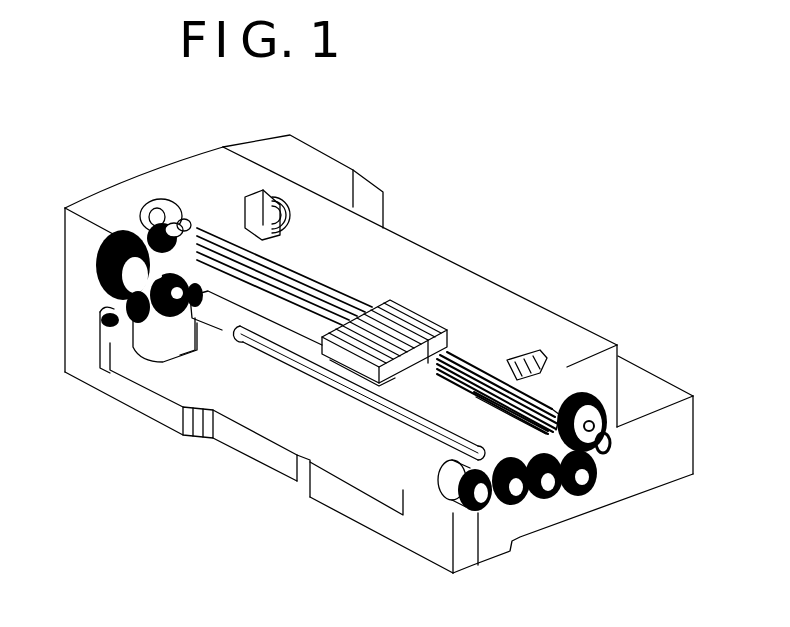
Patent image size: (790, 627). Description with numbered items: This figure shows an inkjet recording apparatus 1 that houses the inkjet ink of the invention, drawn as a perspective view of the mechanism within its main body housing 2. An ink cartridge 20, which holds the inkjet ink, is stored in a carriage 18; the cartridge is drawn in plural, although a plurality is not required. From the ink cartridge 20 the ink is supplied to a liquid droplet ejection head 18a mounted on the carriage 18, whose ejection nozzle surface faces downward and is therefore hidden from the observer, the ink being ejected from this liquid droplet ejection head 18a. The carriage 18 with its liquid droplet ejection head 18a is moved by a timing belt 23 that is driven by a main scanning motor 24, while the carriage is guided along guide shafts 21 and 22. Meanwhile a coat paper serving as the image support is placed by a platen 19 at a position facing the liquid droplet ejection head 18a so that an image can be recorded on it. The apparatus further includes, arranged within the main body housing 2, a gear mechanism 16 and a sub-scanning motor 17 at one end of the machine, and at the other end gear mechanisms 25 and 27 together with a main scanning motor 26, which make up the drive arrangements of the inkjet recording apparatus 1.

The inkjet recording apparatus 1 is at (662, 262).
The main body housing 2 is at (693, 468).
The gear mechanism 16 is at (117, 308).
The sub-scanning motor 17 is at (150, 350).
The carriage 18 is at (432, 380).
The liquid droplet ejection head 18a is at (368, 397).
The platen 19 is at (224, 322).
The ink cartridge 20 is at (458, 345).
The guide shaft 21 is at (530, 419).
The guide shaft 22 is at (438, 440).
The timing belt 23 is at (316, 275).
The main scanning motor 24 is at (283, 222).
The gear mechanism 25 is at (523, 511).
The main scanning motor 26 is at (472, 552).
The gear mechanism 27 is at (575, 507).